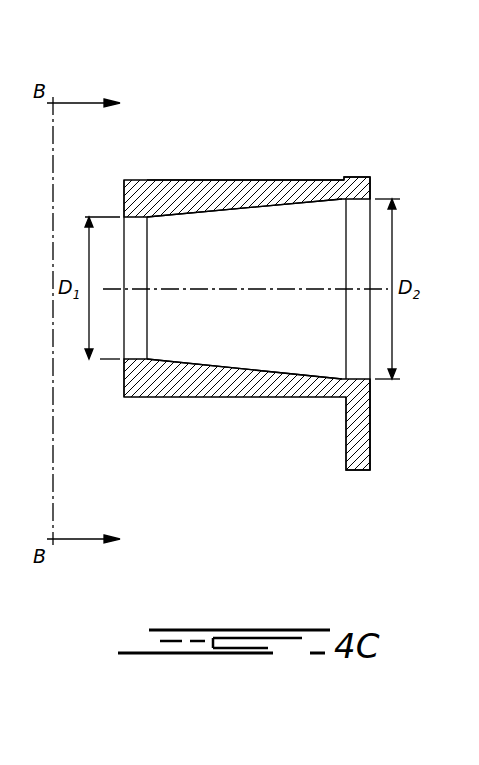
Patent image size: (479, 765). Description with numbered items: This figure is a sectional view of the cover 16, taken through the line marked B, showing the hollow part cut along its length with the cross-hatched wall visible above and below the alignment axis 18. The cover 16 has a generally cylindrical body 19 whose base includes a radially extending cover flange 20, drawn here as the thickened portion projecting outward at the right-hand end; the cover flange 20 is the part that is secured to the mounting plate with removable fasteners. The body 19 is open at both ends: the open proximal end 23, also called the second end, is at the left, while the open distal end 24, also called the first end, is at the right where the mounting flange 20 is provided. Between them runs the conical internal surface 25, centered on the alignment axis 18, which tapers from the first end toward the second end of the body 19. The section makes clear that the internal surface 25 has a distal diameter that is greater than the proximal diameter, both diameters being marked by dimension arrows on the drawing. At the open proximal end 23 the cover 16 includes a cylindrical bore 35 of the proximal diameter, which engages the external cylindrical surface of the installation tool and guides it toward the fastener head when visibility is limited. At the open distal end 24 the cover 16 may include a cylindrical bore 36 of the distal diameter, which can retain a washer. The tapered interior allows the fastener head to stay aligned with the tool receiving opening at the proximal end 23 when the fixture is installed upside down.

The cover 16 is at (304, 150).
The alignment axis 18 is at (313, 285).
The cylindrical body 19 is at (258, 398).
The cover flange 20 is at (370, 445).
The open proximal end 23 is at (124, 320).
The open distal end 24 is at (370, 245).
The conical internal surface 25 is at (242, 181).
The cylindrical bore 35 is at (137, 180).
The cylindrical bore 36 is at (353, 178).